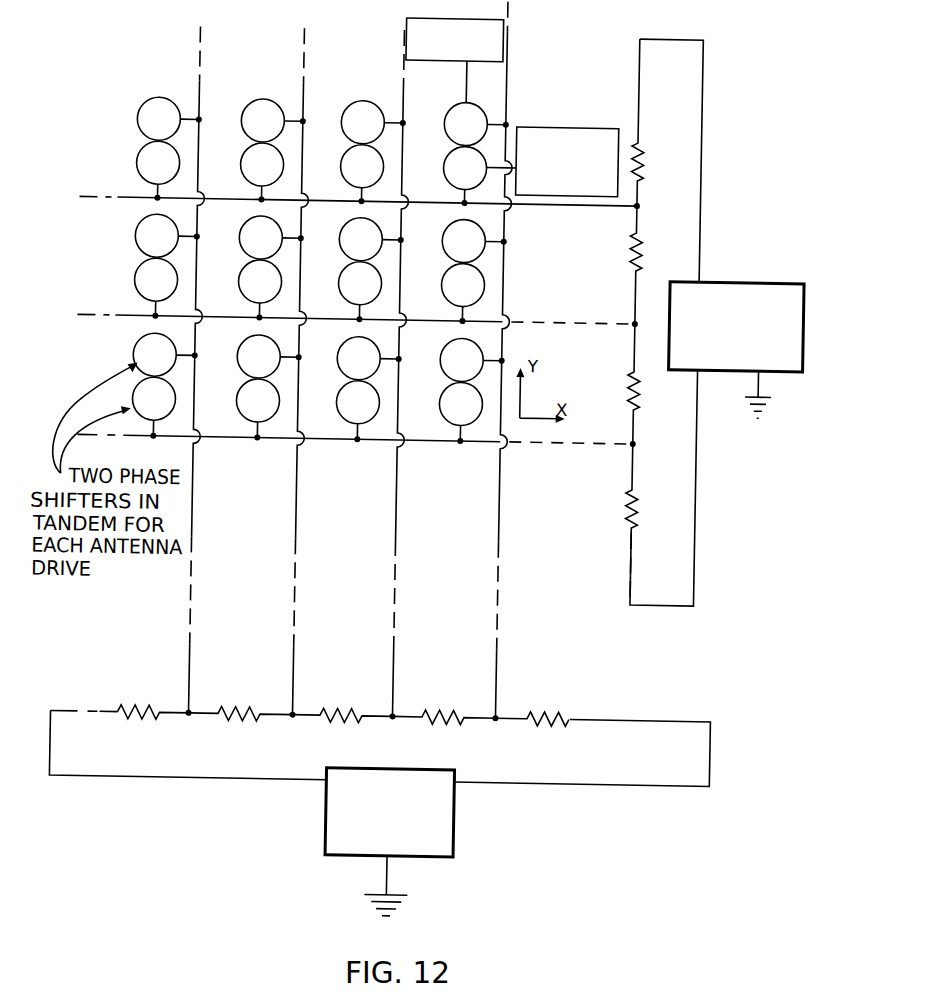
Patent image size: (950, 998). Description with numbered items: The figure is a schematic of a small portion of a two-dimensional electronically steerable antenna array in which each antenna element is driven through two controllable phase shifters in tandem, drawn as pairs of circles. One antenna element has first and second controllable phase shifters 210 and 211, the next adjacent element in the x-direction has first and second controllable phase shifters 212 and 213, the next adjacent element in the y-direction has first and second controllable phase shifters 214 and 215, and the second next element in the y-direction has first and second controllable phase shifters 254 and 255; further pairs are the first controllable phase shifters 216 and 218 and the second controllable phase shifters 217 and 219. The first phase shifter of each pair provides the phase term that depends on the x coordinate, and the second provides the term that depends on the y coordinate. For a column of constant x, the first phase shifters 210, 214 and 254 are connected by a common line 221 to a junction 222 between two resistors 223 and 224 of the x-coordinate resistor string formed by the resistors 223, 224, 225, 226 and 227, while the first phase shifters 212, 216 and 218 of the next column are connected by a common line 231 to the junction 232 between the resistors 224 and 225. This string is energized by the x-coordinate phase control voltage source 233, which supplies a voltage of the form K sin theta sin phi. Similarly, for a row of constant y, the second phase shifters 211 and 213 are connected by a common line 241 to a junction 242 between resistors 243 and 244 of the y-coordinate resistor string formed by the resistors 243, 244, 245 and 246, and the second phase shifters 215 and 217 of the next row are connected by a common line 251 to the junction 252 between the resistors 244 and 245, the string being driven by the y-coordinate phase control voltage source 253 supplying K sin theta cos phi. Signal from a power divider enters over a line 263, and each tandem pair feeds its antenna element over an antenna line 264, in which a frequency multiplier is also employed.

The first controllable phase shifter 210 is at (440, 358).
The second controllable phase shifter 211 is at (440, 404).
The first controllable phase shifter 212 is at (337, 362).
The second controllable phase shifter 213 is at (337, 411).
The first controllable phase shifter 214 is at (440, 238).
The second controllable phase shifter 215 is at (440, 282).
The first controllable phase shifter 216 is at (337, 244).
The second controllable phase shifter 217 is at (337, 288).
The first controllable phase shifter 218 is at (339, 118).
The second controllable phase shifter 219 is at (339, 182).
The common line 221 is at (501, 544).
The junction 222 is at (502, 715).
The resistor 223 is at (564, 708).
The resistor 224 is at (452, 714).
The resistor 225 is at (342, 714).
The resistor 226 is at (242, 714).
The resistor 227 is at (140, 713).
The common line 231 is at (398, 547).
The junction 232 is at (399, 715).
The x-coordinate phase control voltage source 233 is at (462, 830).
The common line 241 is at (333, 441).
The junction 242 is at (633, 443).
The resistor 243 is at (630, 520).
The resistor 244 is at (630, 396).
The resistor 245 is at (628, 248).
The resistor 246 is at (633, 143).
The common line 251 is at (555, 323).
The junction 252 is at (632, 320).
The y-coordinate phase control voltage source 253 is at (742, 277).
The first controllable phase shifter 254 is at (455, 106).
The second controllable phase shifter 255 is at (440, 172).
The line from power divider 263 is at (496, 165).
The antenna line 264 is at (462, 79).